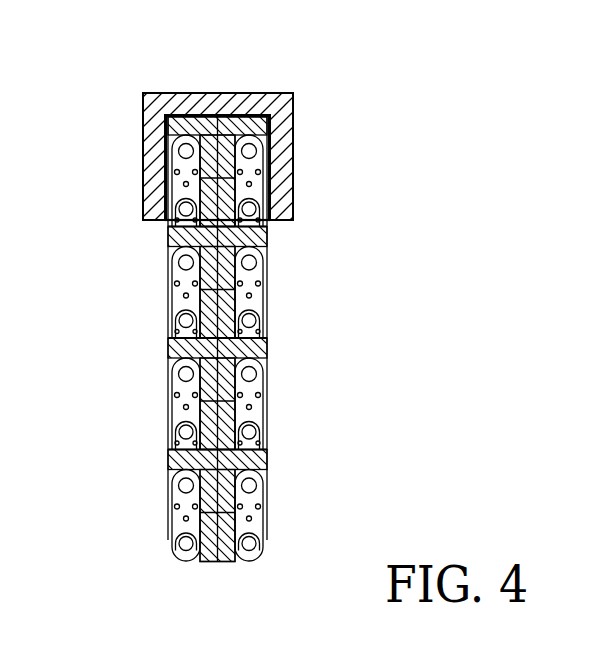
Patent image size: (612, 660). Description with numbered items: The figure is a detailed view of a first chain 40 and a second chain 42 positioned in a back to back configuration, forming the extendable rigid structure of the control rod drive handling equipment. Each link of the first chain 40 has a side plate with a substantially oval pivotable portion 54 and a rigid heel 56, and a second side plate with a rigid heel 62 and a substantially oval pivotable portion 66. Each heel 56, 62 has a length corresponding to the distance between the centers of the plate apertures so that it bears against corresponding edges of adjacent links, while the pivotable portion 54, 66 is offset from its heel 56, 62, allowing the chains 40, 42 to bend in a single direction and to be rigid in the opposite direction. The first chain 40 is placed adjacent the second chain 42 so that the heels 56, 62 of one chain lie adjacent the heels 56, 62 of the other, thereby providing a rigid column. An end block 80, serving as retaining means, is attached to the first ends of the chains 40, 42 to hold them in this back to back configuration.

The end block 80 is at (192, 92).
The first chain 40 is at (213, 357).
The second chain 42 is at (168, 242).
The pivotable portion 54 is at (272, 558).
The heel 56 is at (225, 563).
The heel 62 is at (212, 563).
The pivotable portion 66 is at (172, 552).